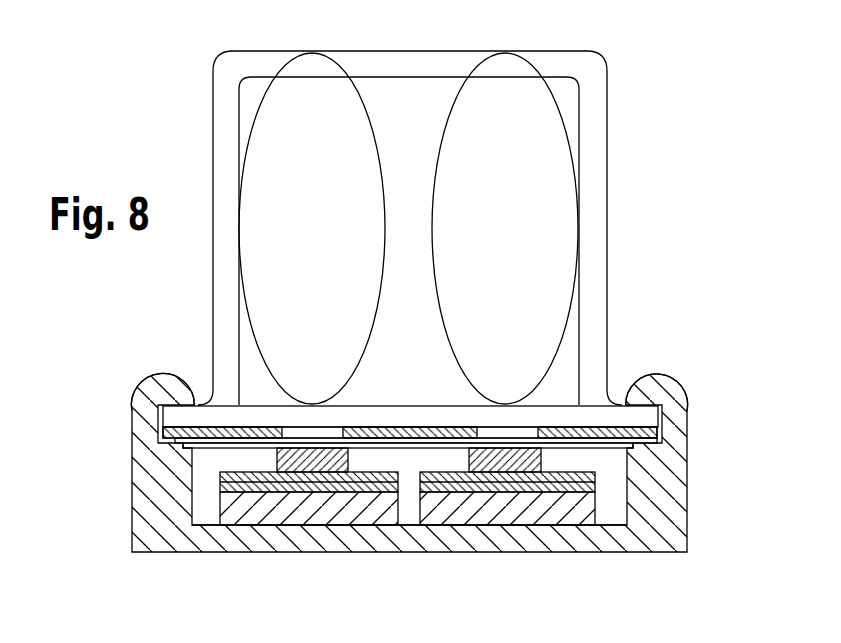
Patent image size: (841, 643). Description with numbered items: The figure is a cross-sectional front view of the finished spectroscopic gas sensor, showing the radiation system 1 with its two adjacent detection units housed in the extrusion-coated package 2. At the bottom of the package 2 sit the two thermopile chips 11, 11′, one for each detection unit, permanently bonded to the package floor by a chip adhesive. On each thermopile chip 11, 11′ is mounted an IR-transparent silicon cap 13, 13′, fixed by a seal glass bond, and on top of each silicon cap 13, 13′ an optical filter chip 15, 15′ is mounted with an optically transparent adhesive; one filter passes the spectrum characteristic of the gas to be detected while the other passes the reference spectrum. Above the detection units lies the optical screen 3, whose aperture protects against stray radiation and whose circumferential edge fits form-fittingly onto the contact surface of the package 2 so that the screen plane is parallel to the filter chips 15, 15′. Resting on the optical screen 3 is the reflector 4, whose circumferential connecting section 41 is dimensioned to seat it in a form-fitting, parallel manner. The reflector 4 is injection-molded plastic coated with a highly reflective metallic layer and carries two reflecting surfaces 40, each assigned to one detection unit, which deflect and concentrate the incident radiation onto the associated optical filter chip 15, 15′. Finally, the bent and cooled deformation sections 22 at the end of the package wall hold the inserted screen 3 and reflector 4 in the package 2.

The radiation system 1 is at (402, 550).
The extrusion-coated package 2 is at (222, 547).
The optical screen 3 is at (660, 434).
The reflector 4 is at (640, 93).
The thermopile chip 11 is at (558, 508).
The thermopile chip 11′ is at (313, 508).
The silicon cap 13 is at (570, 482).
The silicon cap 13′ is at (220, 482).
The optical filter chip 15 is at (543, 460).
The optical filter chip 15′ is at (277, 460).
The deformation section 22 is at (172, 395).
The reflecting surface 40 is at (287, 163).
The connecting section 41 is at (177, 417).